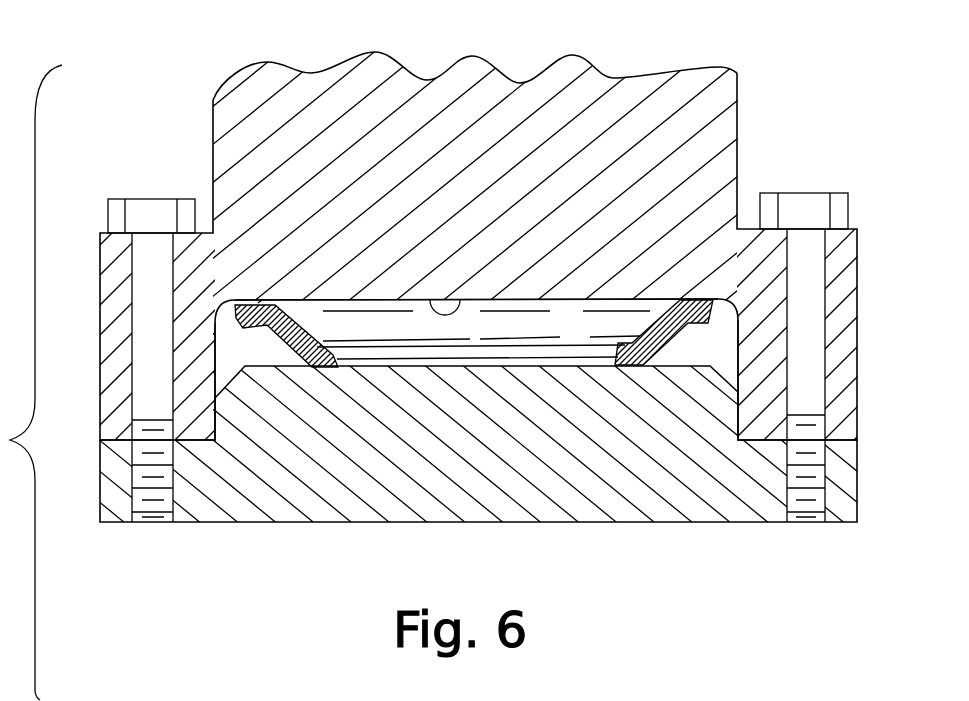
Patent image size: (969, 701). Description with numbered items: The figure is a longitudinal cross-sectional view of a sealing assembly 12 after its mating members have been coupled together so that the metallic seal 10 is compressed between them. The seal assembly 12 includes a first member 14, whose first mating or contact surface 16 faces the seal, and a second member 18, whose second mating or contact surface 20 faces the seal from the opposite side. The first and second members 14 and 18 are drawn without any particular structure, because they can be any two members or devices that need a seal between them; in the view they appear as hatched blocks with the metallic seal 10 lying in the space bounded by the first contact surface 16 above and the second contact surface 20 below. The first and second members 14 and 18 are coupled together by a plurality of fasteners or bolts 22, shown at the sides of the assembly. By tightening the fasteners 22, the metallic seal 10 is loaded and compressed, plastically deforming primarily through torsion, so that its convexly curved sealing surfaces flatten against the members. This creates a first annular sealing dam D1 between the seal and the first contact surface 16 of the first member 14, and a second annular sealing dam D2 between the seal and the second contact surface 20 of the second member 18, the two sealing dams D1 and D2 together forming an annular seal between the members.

The metallic seal 10 is at (266, 344).
The sealing assembly 12 is at (528, 48).
The first member 14 is at (385, 53).
The first contact surface 16 is at (640, 68).
The second member 18 is at (590, 522).
The second contact surface 20 is at (666, 358).
The fasteners 22 is at (145, 199).
The first annular sealing dam D1 is at (262, 300).
The second annular sealing dam D2 is at (313, 368).